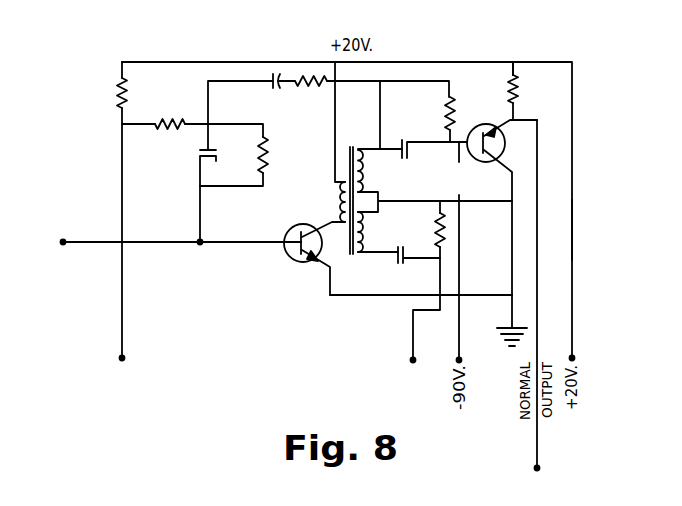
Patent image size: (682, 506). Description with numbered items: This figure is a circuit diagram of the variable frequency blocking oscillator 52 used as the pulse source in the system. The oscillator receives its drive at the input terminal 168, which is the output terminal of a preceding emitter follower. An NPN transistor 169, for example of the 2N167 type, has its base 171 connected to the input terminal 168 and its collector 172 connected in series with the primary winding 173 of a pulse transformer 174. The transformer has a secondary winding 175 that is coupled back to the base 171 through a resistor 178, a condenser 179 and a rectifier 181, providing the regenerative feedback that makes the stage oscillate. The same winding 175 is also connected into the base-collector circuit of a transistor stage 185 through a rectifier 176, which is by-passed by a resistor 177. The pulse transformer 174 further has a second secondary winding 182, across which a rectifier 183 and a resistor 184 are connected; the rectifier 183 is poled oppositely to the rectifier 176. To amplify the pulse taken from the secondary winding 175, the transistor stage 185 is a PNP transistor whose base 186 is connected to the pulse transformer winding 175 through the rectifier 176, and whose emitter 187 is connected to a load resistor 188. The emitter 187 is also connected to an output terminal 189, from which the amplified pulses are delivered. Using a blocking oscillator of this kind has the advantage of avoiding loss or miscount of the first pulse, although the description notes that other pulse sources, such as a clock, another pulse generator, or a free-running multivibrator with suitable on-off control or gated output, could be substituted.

The variable frequency blocking oscillator 52 is at (575, 233).
The input terminal 168 is at (63, 244).
The NPN transistor 169 is at (291, 228).
The base 171 is at (287, 236).
The collector 172 is at (325, 256).
The primary winding 173 is at (334, 198).
The pulse transformer 174 is at (374, 200).
The secondary winding 175 is at (366, 152).
The rectifier 176 is at (402, 139).
The resistor 177 is at (454, 96).
The resistor 178 is at (310, 74).
The condenser 179 is at (274, 72).
The rectifier 181 is at (200, 151).
The secondary winding 182 is at (368, 232).
The rectifier 183 is at (396, 264).
The resistor 184 is at (444, 243).
The transistor stage 185 is at (505, 145).
The base 186 is at (478, 127).
The emitter 187 is at (509, 129).
The load resistor 188 is at (516, 74).
The output terminal 189 is at (538, 177).